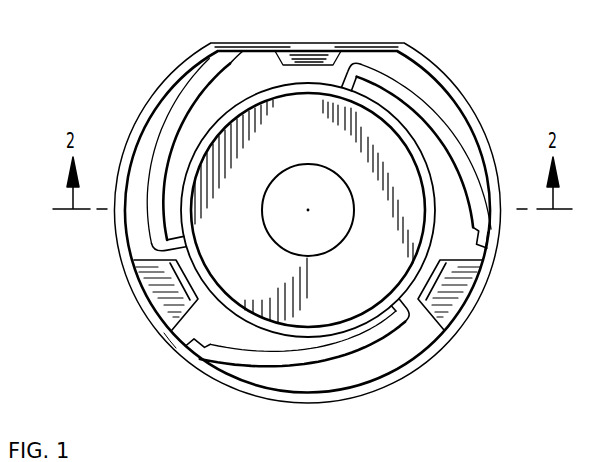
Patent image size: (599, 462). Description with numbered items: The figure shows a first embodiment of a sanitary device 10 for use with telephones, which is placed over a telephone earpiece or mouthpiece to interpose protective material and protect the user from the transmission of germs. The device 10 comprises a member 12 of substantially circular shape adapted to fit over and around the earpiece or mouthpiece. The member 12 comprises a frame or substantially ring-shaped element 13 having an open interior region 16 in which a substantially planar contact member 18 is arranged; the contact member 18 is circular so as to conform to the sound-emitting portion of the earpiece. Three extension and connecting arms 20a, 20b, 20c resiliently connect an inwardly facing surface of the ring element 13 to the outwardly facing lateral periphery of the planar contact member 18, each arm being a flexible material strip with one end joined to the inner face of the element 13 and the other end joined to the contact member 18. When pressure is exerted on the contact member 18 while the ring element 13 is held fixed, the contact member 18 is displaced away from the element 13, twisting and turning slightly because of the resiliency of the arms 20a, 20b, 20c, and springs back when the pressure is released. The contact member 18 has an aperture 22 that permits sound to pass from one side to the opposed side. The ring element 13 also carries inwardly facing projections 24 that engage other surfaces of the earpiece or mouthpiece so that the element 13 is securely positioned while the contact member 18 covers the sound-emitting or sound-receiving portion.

The sanitary device 10 is at (61, 102).
The member 12 is at (492, 136).
The ring-shaped element 13 is at (494, 175).
The open interior region 16 is at (456, 232).
The planar contact member 18 is at (364, 268).
The extension and connecting arm 20a is at (172, 138).
The extension and connecting arm 20b is at (437, 130).
The extension and connecting arm 20c is at (305, 363).
The aperture 22 is at (283, 178).
The inwardly facing projections 24 is at (494, 284).